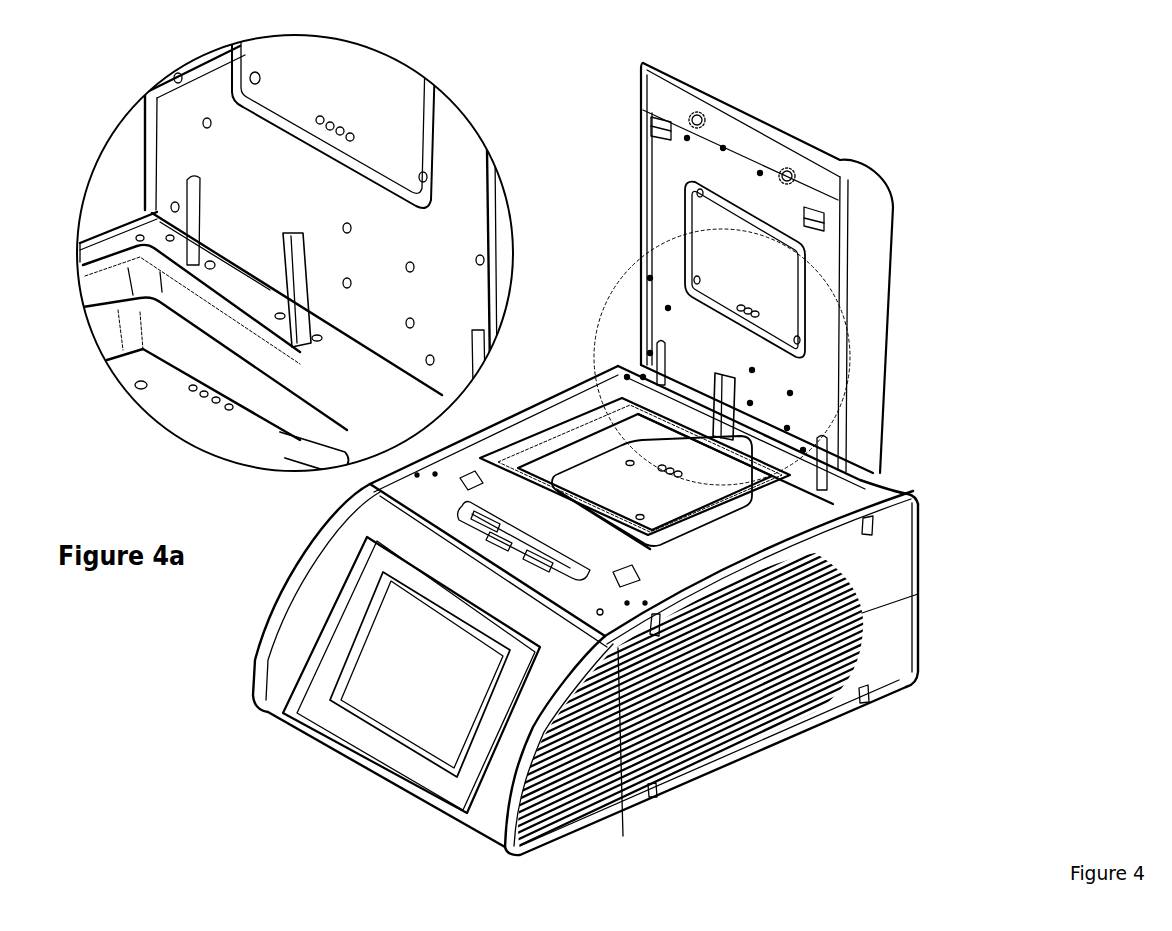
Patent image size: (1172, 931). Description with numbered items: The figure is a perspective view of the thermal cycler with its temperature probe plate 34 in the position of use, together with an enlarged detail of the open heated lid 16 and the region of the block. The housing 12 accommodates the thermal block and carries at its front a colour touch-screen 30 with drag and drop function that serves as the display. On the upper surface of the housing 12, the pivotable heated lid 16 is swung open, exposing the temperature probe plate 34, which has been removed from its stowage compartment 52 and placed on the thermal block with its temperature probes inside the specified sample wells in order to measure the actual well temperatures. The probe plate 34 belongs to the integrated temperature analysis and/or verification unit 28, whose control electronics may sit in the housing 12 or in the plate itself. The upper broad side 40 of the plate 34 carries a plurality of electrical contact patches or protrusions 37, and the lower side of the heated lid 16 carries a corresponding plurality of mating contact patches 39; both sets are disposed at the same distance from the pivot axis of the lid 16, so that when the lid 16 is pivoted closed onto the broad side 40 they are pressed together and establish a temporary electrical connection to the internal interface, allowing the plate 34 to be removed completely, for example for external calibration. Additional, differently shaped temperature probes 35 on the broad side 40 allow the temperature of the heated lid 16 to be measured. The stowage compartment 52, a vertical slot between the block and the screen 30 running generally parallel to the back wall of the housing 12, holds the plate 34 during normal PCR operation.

In FIG. 4A, the housing 12 is at (93, 250).
In FIG. 4, the housing 12 is at (478, 820).
In FIG. 4A, the heated lid 16 is at (470, 153).
In FIG. 4, the heated lid 16 is at (809, 178).
In FIG. 4, the integrated temperature analysis and/or verification unit 28 is at (642, 519).
In FIG. 4, the colour touch-screen 30 is at (403, 703).
In FIG. 4A, the temperature probe plate 34 is at (261, 441).
In FIG. 4, the temperature probe plate 34 is at (597, 470).
In FIG. 4A, the additional temperature probes 35 is at (135, 390).
In FIG. 4, the additional temperature probes 35 is at (631, 466).
In FIG. 4A, the electrical contact patches 37 is at (194, 391).
In FIG. 4A, the mating contact patches 39 is at (350, 134).
In FIG. 4A, the broad side 40 is at (172, 413).
In FIG. 4, the stowage compartment 52 is at (495, 525).